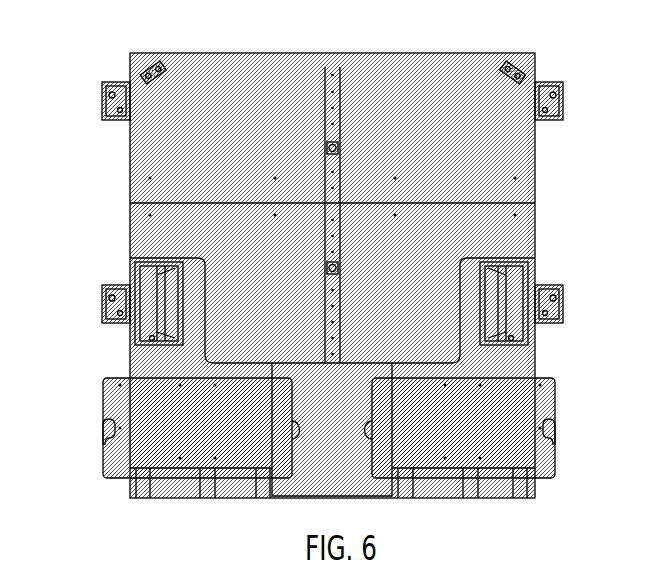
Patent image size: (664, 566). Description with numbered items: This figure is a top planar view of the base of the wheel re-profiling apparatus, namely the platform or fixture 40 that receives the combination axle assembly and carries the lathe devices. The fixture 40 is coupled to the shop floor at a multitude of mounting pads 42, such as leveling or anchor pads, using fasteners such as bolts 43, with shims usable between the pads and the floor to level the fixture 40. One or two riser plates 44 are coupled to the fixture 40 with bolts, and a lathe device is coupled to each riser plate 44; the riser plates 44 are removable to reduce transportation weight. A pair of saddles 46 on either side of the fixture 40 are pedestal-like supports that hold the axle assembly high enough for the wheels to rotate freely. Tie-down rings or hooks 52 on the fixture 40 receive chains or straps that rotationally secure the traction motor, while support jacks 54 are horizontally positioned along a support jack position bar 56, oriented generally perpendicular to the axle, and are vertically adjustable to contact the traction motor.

The fixture 40 is at (549, 53).
The mounting pads 42 is at (102, 114).
The bolts 43 is at (102, 98).
The riser plates 44 is at (103, 410).
The saddles 46 is at (133, 270).
The tie-down rings or hooks 52 is at (150, 66).
The support jacks 54 is at (338, 146).
The support jack position bar 56 is at (338, 76).